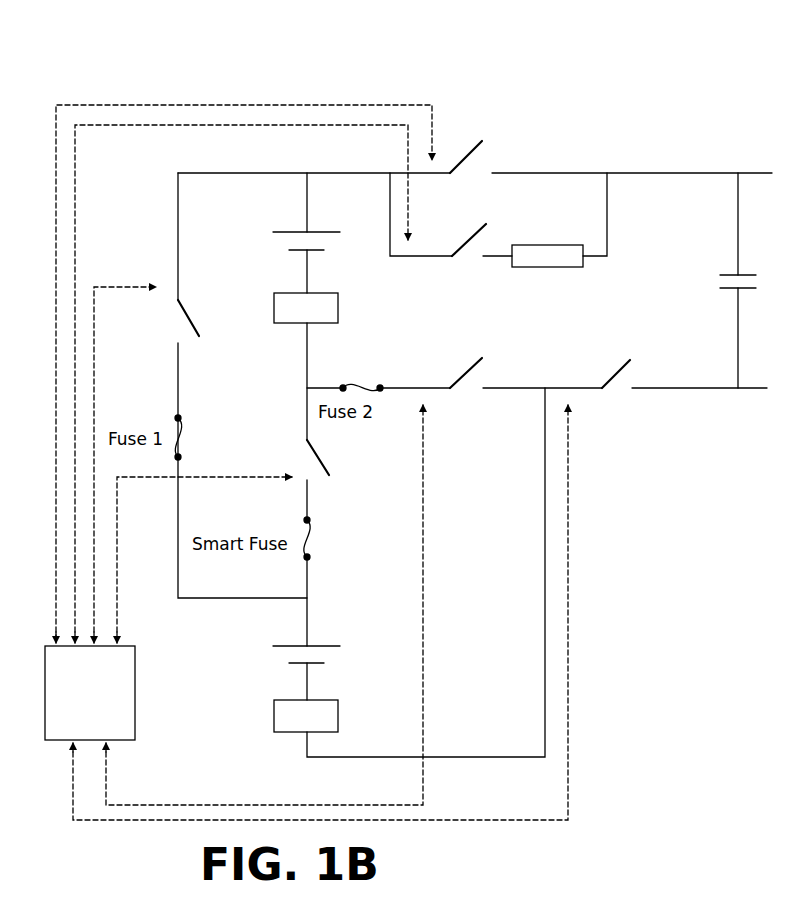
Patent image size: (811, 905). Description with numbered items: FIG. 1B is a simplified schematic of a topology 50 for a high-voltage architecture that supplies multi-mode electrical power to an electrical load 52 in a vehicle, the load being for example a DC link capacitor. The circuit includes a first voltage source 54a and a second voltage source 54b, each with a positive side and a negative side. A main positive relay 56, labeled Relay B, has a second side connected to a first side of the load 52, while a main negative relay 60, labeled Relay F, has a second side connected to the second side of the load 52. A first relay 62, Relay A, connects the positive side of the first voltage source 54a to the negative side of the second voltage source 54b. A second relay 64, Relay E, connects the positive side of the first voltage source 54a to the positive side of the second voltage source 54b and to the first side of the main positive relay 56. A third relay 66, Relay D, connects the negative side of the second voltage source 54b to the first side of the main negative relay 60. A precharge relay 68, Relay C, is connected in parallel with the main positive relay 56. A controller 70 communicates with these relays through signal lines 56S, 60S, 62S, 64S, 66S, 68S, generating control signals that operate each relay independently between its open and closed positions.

The topology 50 is at (668, 82).
The electrical load 52 is at (748, 256).
The first voltage source 54a is at (262, 682).
The second voltage source 54b is at (250, 247).
The main positive relay 56 is at (503, 146).
The signal line 56S is at (334, 100).
The main negative relay 60 is at (644, 378).
The signal line 60S is at (570, 601).
The first relay 62 is at (328, 500).
The signal line 62S is at (158, 483).
The second relay 64 is at (200, 366).
The signal line 64S is at (138, 284).
The third relay 66 is at (498, 378).
The signal line 66S is at (425, 640).
The precharge relay 68 is at (490, 280).
The signal line 68S is at (163, 128).
The controller 70 is at (140, 678).